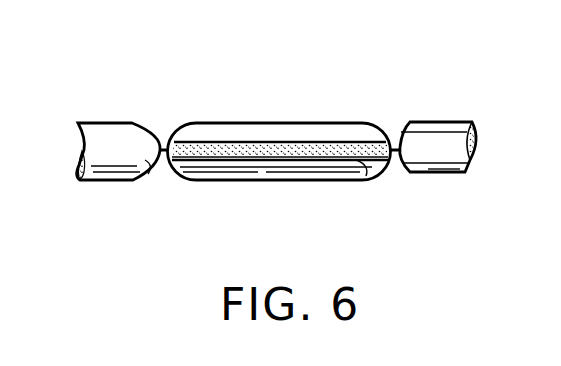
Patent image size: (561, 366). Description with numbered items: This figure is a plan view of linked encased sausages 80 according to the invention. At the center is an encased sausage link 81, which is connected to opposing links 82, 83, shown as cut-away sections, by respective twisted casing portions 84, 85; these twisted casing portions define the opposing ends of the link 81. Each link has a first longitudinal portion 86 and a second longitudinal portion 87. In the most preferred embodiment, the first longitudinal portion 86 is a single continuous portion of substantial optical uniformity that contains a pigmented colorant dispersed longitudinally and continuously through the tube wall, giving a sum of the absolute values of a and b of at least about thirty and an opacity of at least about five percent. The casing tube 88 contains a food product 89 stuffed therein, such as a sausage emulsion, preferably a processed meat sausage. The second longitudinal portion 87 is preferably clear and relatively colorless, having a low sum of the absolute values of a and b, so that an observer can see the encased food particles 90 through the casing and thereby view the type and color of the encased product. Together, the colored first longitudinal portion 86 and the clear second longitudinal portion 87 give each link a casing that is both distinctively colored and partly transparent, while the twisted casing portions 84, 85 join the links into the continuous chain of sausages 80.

The linked encased sausages 80 is at (372, 74).
The encased sausage link 81 is at (262, 180).
The opposing link 82 is at (137, 180).
The opposing link 83 is at (432, 173).
The twisted casing portion 84 is at (165, 140).
The twisted casing portion 85 is at (386, 142).
The first longitudinal portion 86 is at (104, 138).
The second longitudinal portion 87 is at (310, 142).
The casing tube 88 is at (208, 122).
The food product 89 is at (507, 118).
The encased food particles 90 is at (255, 157).